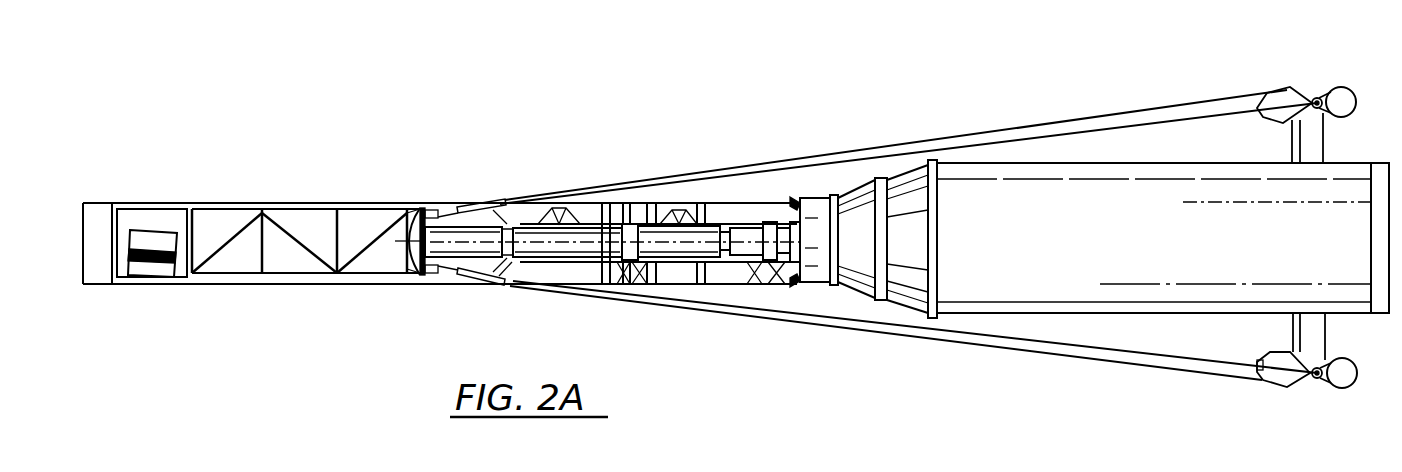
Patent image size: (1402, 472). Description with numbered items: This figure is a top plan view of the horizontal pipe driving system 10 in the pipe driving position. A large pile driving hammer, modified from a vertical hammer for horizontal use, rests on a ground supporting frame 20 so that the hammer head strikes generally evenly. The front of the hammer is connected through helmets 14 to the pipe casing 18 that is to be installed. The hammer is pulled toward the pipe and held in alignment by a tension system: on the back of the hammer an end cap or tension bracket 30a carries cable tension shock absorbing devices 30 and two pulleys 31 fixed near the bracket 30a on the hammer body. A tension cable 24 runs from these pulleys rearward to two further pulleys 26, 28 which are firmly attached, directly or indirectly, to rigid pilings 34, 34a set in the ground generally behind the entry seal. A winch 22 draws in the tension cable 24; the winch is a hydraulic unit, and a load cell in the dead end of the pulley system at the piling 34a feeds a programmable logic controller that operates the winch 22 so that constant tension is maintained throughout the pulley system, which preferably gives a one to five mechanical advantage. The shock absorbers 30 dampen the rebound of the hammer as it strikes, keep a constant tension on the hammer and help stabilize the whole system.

The deployable boom assembly 10 is at (688, 163).
The helmets 14 is at (877, 182).
The pipe casing 18 is at (1248, 258).
The frame 20 is at (146, 198).
The winch 22 is at (147, 268).
The tension cable 24 is at (548, 293).
The pulley 26 is at (1287, 381).
The pulley 28 is at (1277, 92).
The cable tension shock absorbing devices 30 is at (479, 279).
The tension bracket 30a is at (410, 217).
The pulleys 31 is at (510, 200).
The rigid piling 34 is at (1347, 381).
The rigid piling 34a is at (1344, 89).